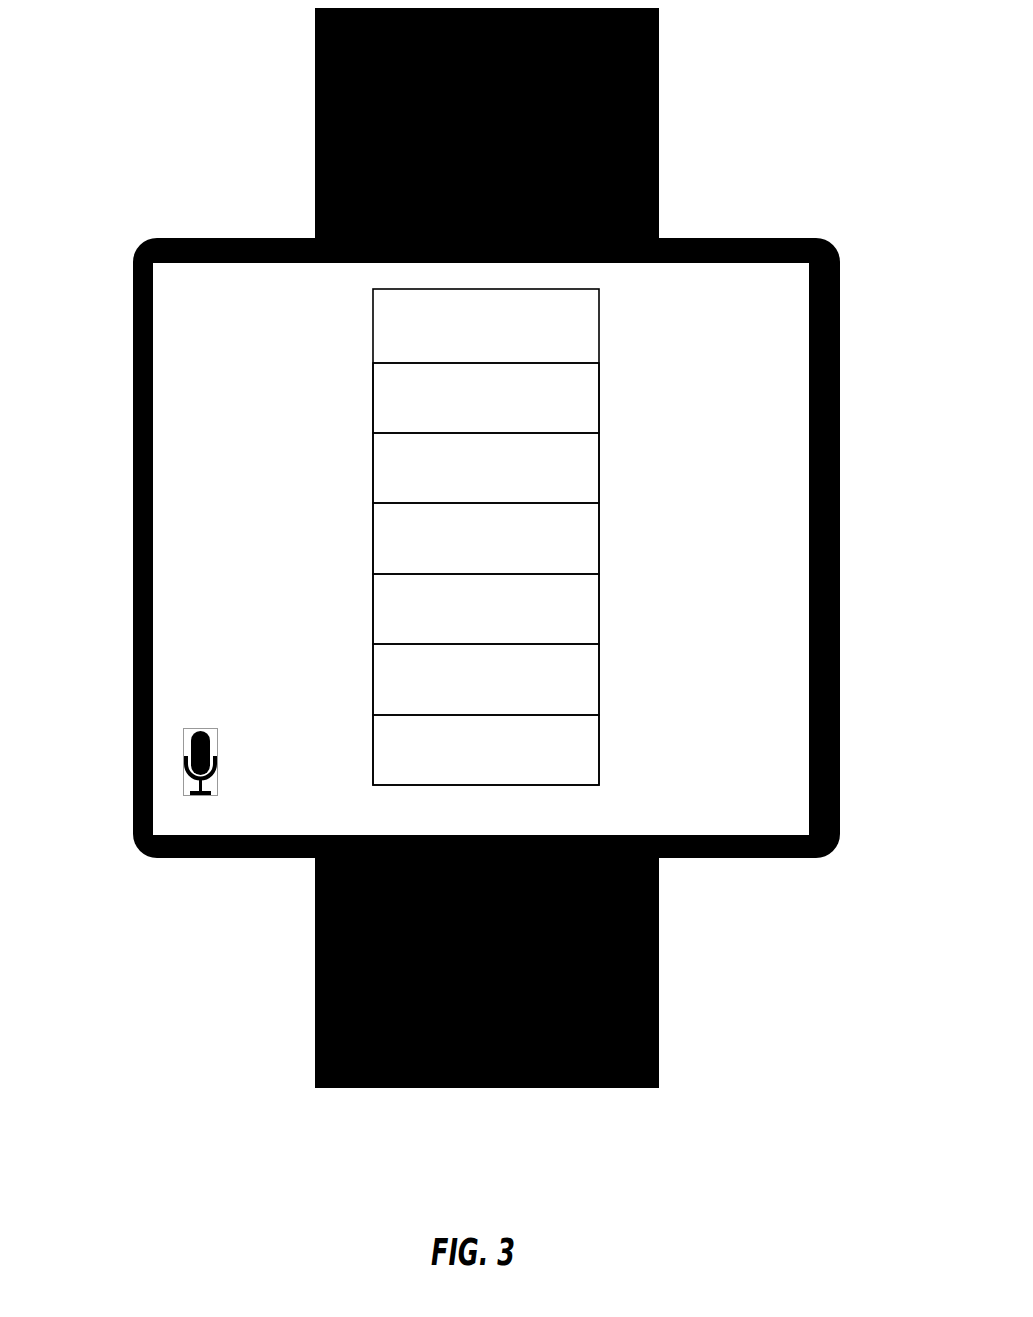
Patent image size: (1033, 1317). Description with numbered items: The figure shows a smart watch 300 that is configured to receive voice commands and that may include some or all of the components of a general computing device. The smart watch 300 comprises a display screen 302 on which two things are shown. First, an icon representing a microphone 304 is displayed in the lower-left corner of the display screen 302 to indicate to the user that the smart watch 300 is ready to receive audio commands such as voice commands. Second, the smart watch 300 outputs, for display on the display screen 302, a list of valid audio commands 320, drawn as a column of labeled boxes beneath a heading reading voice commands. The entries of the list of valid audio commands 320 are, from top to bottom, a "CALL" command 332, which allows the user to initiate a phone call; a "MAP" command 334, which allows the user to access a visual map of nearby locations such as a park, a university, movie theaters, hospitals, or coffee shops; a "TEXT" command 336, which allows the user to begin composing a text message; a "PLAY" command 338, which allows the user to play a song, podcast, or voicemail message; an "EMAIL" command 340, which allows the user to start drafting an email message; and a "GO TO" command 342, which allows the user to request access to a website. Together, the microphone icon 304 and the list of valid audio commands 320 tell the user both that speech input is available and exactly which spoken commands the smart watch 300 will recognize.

The smart watch 300 is at (439, 548).
The display screen 302 is at (232, 314).
The microphone icon 304 is at (178, 742).
The list of valid audio commands 320 is at (484, 527).
The CALL command 332 is at (591, 386).
The MAP command 334 is at (591, 456).
The TEXT command 336 is at (591, 526).
The PLAY command 338 is at (591, 599).
The EMAIL command 340 is at (591, 671).
The GO TO command 342 is at (591, 739).